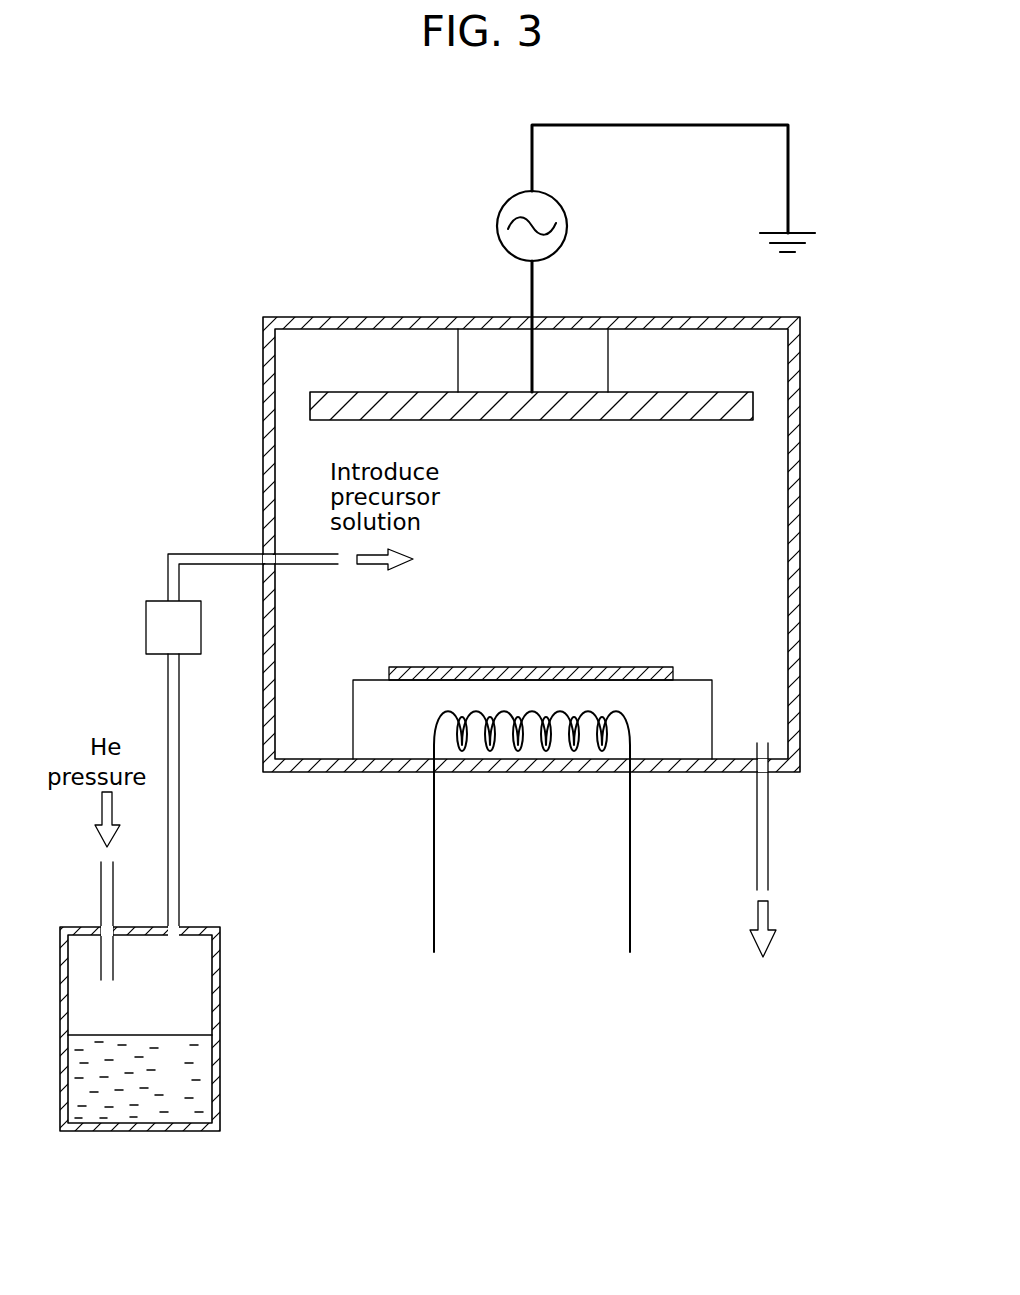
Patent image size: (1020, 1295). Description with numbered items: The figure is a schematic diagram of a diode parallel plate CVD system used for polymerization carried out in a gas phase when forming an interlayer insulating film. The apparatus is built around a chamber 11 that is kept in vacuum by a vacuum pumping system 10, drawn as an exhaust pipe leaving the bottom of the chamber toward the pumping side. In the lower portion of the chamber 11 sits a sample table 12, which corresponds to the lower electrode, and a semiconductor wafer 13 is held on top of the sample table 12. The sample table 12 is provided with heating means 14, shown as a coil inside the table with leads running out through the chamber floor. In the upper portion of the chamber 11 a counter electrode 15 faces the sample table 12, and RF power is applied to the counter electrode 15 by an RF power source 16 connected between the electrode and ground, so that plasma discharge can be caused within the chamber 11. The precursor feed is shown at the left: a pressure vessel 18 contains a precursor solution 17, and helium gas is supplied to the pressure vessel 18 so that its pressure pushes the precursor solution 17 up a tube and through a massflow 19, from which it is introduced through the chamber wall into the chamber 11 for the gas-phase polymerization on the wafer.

The vacuum pumping system 10 is at (770, 841).
The chamber 11 is at (800, 480).
The sample table 12 is at (712, 709).
The semiconductor wafer 13 is at (673, 671).
The heating means 14 is at (434, 850).
The counter electrode 15 is at (753, 405).
The RF power source 16 is at (567, 231).
The precursor solution 17 is at (200, 1072).
The pressure vessel 18 is at (213, 983).
The massflow 19 is at (146, 625).